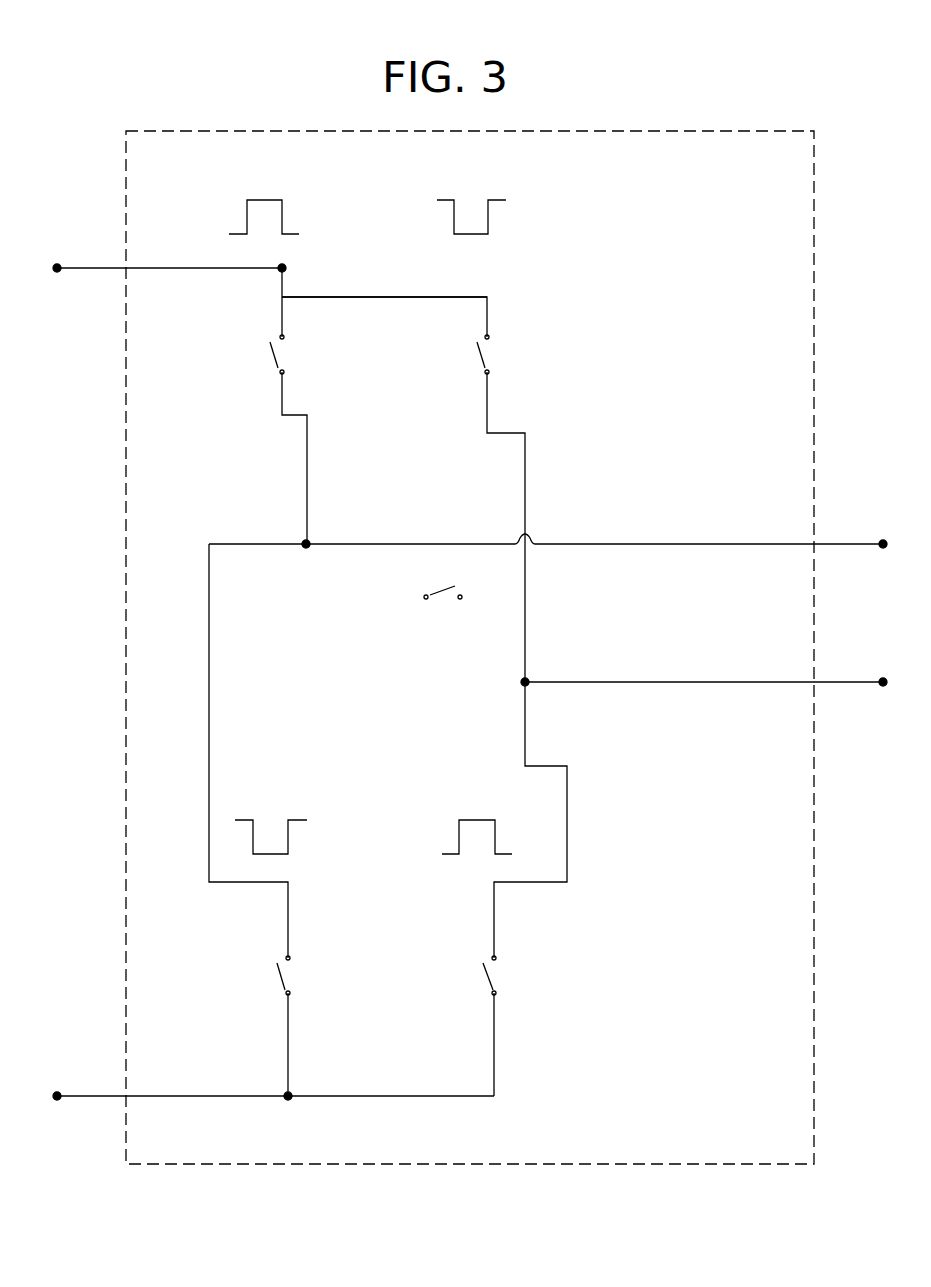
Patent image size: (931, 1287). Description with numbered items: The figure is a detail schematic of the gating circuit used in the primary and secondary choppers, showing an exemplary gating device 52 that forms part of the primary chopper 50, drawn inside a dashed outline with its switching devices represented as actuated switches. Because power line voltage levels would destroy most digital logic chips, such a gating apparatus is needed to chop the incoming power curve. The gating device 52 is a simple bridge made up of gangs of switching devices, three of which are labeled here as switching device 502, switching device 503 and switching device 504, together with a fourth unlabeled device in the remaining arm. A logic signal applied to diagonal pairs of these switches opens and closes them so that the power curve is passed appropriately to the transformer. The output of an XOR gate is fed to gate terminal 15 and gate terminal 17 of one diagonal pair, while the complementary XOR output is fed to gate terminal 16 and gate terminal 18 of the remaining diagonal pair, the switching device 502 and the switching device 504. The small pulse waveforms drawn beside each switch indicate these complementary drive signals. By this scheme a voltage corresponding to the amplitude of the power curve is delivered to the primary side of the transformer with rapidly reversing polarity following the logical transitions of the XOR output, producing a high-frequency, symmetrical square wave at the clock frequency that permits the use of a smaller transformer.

The primary chopper 50 is at (782, 174).
The gating device 52 is at (621, 326).
The gate terminal 15 is at (230, 350).
The gate terminal 16 is at (437, 350).
The gate terminal 17 is at (442, 971).
The gate terminal 18 is at (235, 971).
The switching device 502 is at (468, 339).
The switching device 503 is at (474, 968).
The switching device 504 is at (268, 968).